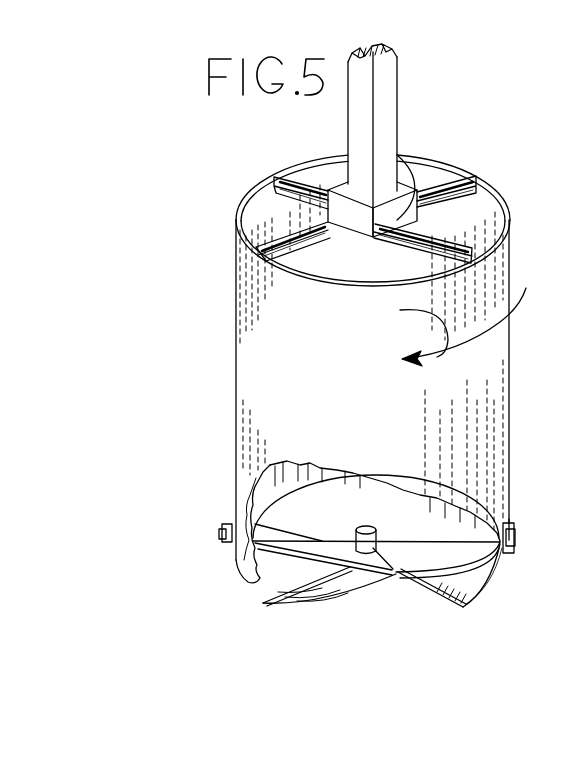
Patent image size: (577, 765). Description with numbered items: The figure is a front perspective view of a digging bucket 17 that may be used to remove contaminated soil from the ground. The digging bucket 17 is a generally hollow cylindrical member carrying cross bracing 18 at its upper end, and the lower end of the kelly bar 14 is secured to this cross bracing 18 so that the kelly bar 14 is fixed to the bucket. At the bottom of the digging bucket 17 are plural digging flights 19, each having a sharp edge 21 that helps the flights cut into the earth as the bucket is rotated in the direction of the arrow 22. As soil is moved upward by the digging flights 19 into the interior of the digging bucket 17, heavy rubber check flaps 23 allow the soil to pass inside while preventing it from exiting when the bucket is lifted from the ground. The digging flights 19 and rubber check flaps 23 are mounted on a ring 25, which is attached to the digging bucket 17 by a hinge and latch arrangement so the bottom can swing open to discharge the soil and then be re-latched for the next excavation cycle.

The kelly bar 14 is at (392, 103).
The digging bucket 17 is at (250, 341).
The cross bracing 18 is at (306, 175).
The digging flights 19 is at (340, 584).
The sharp edge 21 is at (305, 586).
The arrow 22 is at (449, 327).
The rubber check flaps 23 is at (326, 548).
The ring 25 is at (513, 528).